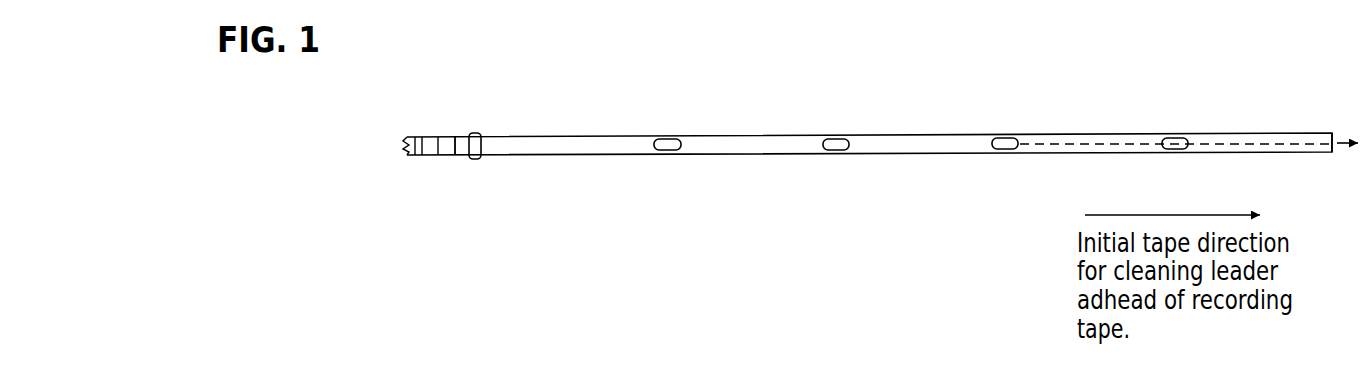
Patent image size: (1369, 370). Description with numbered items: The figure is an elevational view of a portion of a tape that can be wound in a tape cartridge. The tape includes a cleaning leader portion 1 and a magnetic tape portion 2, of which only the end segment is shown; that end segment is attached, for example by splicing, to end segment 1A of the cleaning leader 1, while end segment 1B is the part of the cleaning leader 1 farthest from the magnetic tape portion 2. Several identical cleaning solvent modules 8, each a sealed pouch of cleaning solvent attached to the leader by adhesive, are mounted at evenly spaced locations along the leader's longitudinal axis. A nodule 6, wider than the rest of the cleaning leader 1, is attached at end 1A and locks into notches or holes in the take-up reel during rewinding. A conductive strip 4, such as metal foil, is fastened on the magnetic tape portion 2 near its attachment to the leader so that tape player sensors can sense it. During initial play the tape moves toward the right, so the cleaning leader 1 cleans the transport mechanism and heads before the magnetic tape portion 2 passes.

The cleaning leader portion 1 is at (947, 125).
The end segment of cleaning leader 1A is at (460, 156).
The end segment of cleaning leader 1B is at (1325, 153).
The magnetic tape portion 2 is at (418, 156).
The conductive strip 4 is at (433, 137).
The nodule 6 is at (475, 134).
The cleaning solvent module 8 is at (1152, 163).